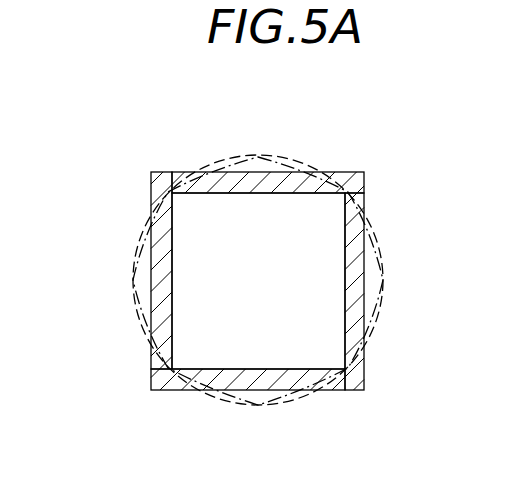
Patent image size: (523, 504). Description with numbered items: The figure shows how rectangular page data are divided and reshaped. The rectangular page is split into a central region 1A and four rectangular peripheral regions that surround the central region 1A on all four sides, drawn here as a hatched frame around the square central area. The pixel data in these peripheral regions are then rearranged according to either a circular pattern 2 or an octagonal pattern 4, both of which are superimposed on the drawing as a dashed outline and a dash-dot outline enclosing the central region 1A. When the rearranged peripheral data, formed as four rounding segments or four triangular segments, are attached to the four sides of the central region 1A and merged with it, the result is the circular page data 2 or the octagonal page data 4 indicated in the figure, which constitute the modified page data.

The central region 1A is at (270, 290).
The circular pattern 2 is at (282, 402).
The octagonal pattern 4 is at (240, 401).